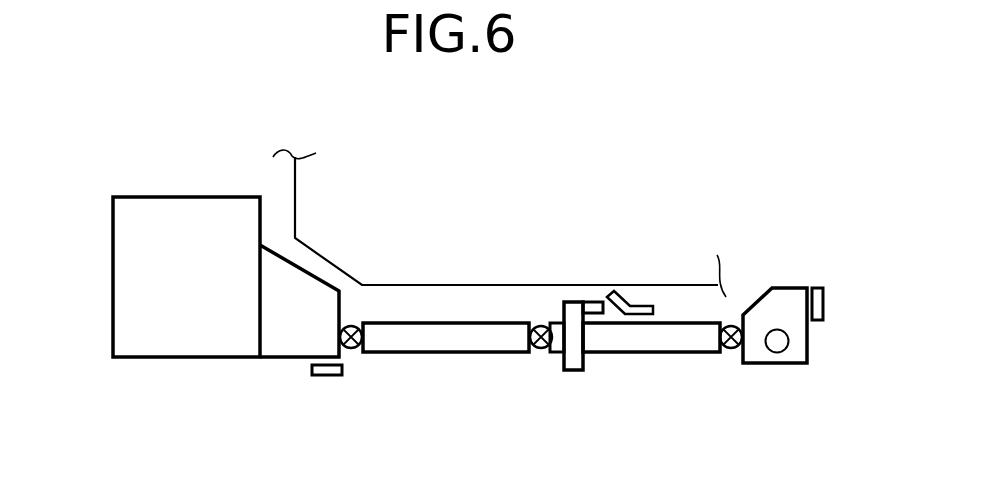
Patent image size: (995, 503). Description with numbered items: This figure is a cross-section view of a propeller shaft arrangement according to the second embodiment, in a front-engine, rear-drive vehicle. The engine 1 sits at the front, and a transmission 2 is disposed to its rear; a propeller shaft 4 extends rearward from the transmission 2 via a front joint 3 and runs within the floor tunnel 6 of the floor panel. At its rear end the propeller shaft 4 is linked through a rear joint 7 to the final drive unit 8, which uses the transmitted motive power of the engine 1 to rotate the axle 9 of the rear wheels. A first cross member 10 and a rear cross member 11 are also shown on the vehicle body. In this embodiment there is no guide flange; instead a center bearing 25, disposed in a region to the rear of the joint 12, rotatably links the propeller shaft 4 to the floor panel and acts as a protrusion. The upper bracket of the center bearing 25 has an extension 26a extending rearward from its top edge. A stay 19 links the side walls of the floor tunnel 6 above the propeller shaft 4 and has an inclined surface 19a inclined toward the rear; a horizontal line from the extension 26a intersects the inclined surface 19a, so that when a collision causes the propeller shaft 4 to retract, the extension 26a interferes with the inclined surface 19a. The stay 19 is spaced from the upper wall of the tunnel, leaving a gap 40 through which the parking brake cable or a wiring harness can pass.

The engine 1 is at (164, 197).
The transmission 2 is at (277, 352).
The front joint 3 is at (351, 349).
The propeller shaft 4 is at (437, 358).
The floor tunnel 6 is at (437, 285).
The rear joint 7 is at (728, 349).
The final drive unit 8 is at (784, 288).
The axle 9 is at (777, 353).
The first cross member 10 is at (323, 377).
The rear cross member 11 is at (823, 300).
The joint 12 is at (538, 324).
The stay 19 is at (651, 305).
The inclined surface 19a is at (625, 296).
The center bearing 25 is at (572, 376).
The extension 26a is at (591, 301).
The gap 40 is at (601, 300).